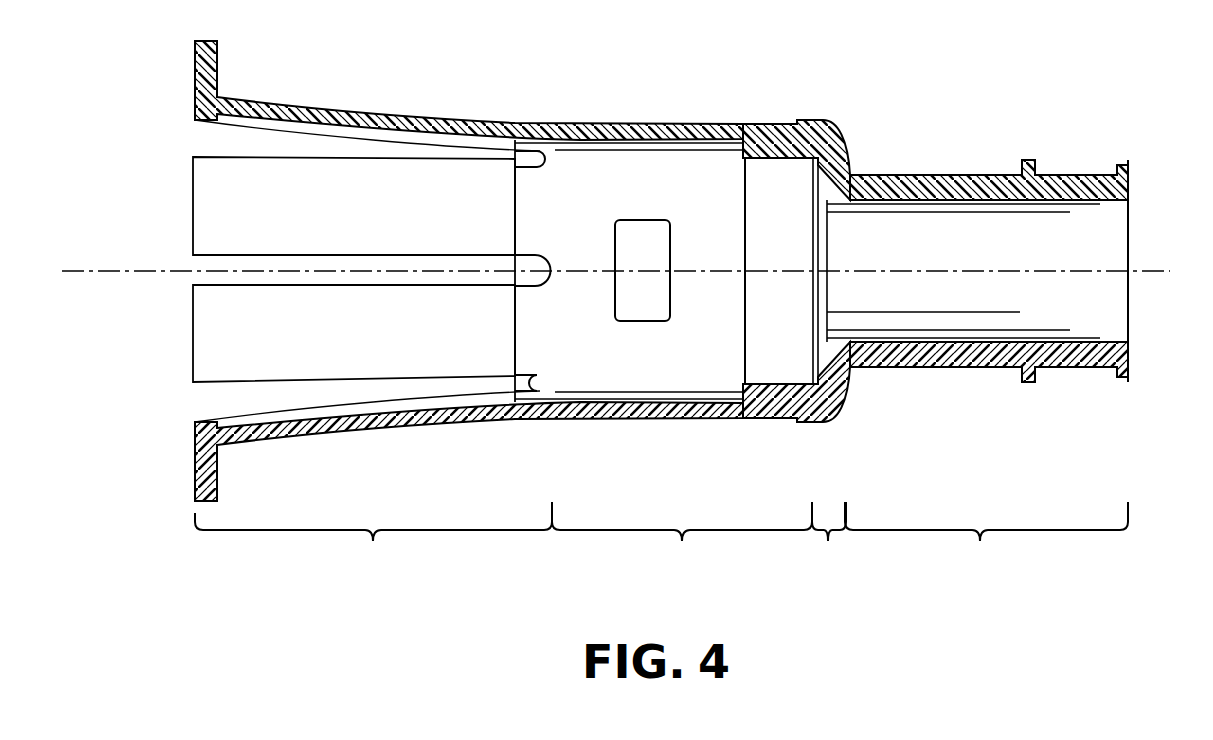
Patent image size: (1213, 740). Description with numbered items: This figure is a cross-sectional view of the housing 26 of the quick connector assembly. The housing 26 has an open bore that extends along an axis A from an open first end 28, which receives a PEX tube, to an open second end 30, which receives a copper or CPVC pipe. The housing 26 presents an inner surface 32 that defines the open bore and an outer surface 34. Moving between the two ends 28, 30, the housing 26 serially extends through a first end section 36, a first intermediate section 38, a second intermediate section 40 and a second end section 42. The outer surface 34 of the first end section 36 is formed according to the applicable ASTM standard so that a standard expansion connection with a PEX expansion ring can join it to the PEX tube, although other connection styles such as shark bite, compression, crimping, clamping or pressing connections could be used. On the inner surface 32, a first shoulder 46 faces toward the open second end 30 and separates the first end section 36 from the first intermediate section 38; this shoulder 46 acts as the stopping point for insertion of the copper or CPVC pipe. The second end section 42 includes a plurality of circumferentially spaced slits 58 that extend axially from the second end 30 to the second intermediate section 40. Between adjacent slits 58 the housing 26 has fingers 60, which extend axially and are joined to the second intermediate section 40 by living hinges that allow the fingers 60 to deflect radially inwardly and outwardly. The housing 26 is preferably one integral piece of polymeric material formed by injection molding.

The housing 26 is at (803, 78).
The open first end 28 is at (1130, 188).
The open second end 30 is at (193, 345).
The inner surface 32 is at (868, 210).
The outer surface 34 is at (665, 124).
The first end section 36 is at (1012, 349).
The first intermediate section 38 is at (796, 344).
The second intermediate section 40 is at (666, 325).
The second end section 42 is at (434, 306).
The first shoulder 46 is at (815, 362).
The slits 58 is at (455, 158).
The fingers 60 is at (365, 120).
The axis A is at (92, 272).